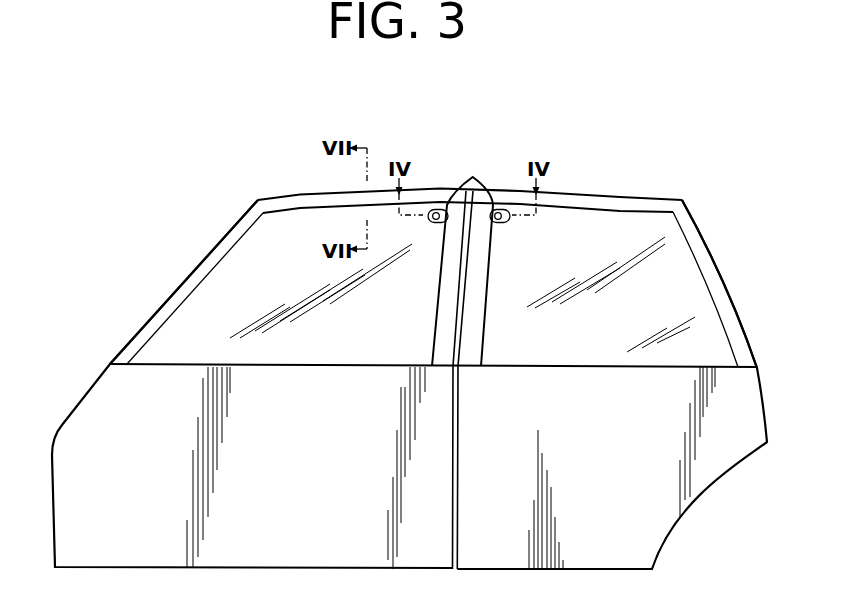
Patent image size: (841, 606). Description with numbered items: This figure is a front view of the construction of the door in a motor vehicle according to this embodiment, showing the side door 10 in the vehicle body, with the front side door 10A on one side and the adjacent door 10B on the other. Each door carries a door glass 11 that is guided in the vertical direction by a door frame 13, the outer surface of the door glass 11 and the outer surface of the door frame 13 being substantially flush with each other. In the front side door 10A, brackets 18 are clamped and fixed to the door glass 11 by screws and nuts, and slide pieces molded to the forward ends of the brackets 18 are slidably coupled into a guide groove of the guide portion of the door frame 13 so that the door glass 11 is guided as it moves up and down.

The side door 10 is at (512, 118).
The front side door 10A is at (433, 189).
The rear sliding door 10B is at (510, 189).
The door glass 11 is at (287, 227).
The door frame 13 is at (175, 283).
The bracket 18 is at (469, 258).